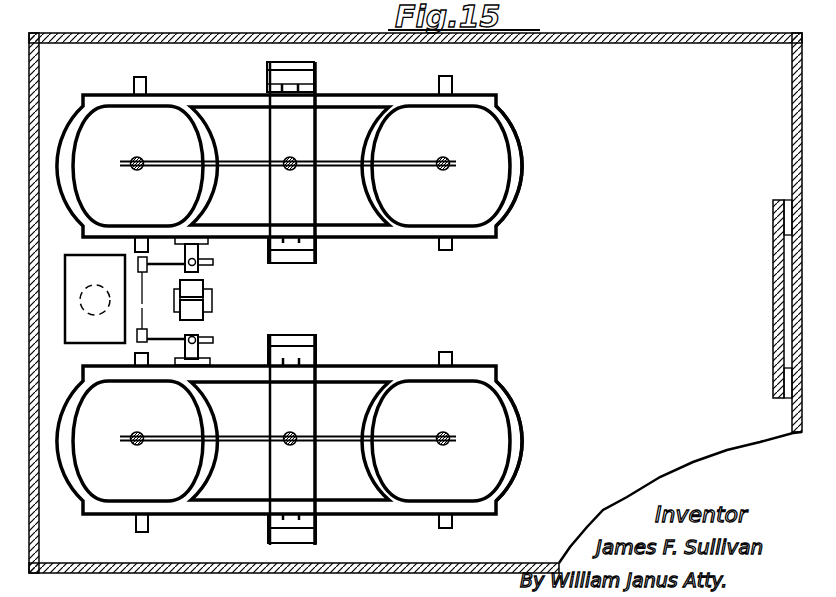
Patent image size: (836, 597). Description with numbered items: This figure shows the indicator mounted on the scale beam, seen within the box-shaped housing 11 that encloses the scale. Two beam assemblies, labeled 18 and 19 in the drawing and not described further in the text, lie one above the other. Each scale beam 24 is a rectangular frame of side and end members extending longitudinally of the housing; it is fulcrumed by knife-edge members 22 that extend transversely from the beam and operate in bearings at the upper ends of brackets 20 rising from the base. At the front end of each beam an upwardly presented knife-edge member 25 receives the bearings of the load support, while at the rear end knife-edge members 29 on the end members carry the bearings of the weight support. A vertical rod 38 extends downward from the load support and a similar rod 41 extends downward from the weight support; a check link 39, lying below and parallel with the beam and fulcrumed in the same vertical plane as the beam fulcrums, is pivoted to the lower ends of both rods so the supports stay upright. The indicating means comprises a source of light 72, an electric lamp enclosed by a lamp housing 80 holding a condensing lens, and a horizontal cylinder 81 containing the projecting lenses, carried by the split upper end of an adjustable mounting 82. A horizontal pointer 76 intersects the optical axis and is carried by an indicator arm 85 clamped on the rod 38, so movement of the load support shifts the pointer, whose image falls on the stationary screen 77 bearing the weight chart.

The housing 11 is at (668, 36).
The upper frame 18 is at (518, 106).
The lower frame 19 is at (530, 455).
The brackets 20 is at (267, 72).
The knife-edge members 22 is at (287, 363).
The scale beam 24 is at (522, 204).
The knife-edge member 25 is at (134, 83).
The knife-edge members 29 is at (453, 82).
The rod 38 is at (137, 171).
The check link 39 is at (250, 168).
The rod 41 is at (445, 157).
The source of light 72 is at (93, 313).
The pointer 76 is at (144, 283).
The stationary member or screen 77 is at (773, 272).
The housing 80 is at (78, 267).
The cylinder 81 is at (212, 296).
The mounting 82 is at (212, 308).
The indicator arm 85 is at (213, 262).